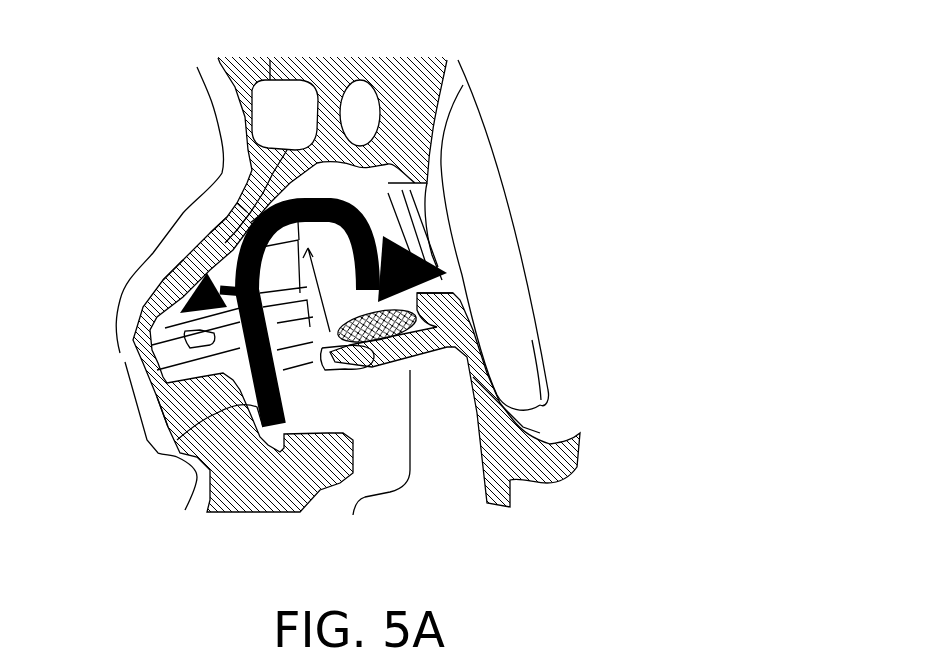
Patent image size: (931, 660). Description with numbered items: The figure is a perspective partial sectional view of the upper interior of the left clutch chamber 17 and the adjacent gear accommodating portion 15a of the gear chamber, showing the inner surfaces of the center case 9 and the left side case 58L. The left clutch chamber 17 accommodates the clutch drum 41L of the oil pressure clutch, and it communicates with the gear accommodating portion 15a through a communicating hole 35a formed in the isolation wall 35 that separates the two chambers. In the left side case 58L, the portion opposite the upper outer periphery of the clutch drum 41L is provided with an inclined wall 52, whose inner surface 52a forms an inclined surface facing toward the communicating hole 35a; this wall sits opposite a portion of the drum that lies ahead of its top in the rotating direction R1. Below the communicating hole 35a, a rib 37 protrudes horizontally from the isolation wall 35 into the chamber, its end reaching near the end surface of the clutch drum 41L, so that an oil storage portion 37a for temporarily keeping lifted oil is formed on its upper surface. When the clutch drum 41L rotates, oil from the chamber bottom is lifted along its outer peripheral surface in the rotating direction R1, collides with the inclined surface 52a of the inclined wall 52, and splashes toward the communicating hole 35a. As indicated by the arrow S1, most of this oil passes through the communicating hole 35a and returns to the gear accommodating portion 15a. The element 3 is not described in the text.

The center case 9 is at (336, 56).
The gear accommodating portion 15a is at (440, 102).
The left side case 58L is at (237, 100).
The left clutch chamber 17 is at (289, 193).
The arrow S1 is at (247, 213).
The inner surface (inclined surface) 52a is at (247, 250).
The inclined wall 52 is at (177, 250).
The rotating direction R1 is at (170, 437).
The seat back 3 is at (475, 152).
The communicating hole 35a is at (441, 222).
The isolation wall 35 is at (457, 302).
The oil storage portion 37a is at (453, 337).
The rib 37 is at (410, 372).
The clutch drum 41L is at (333, 407).